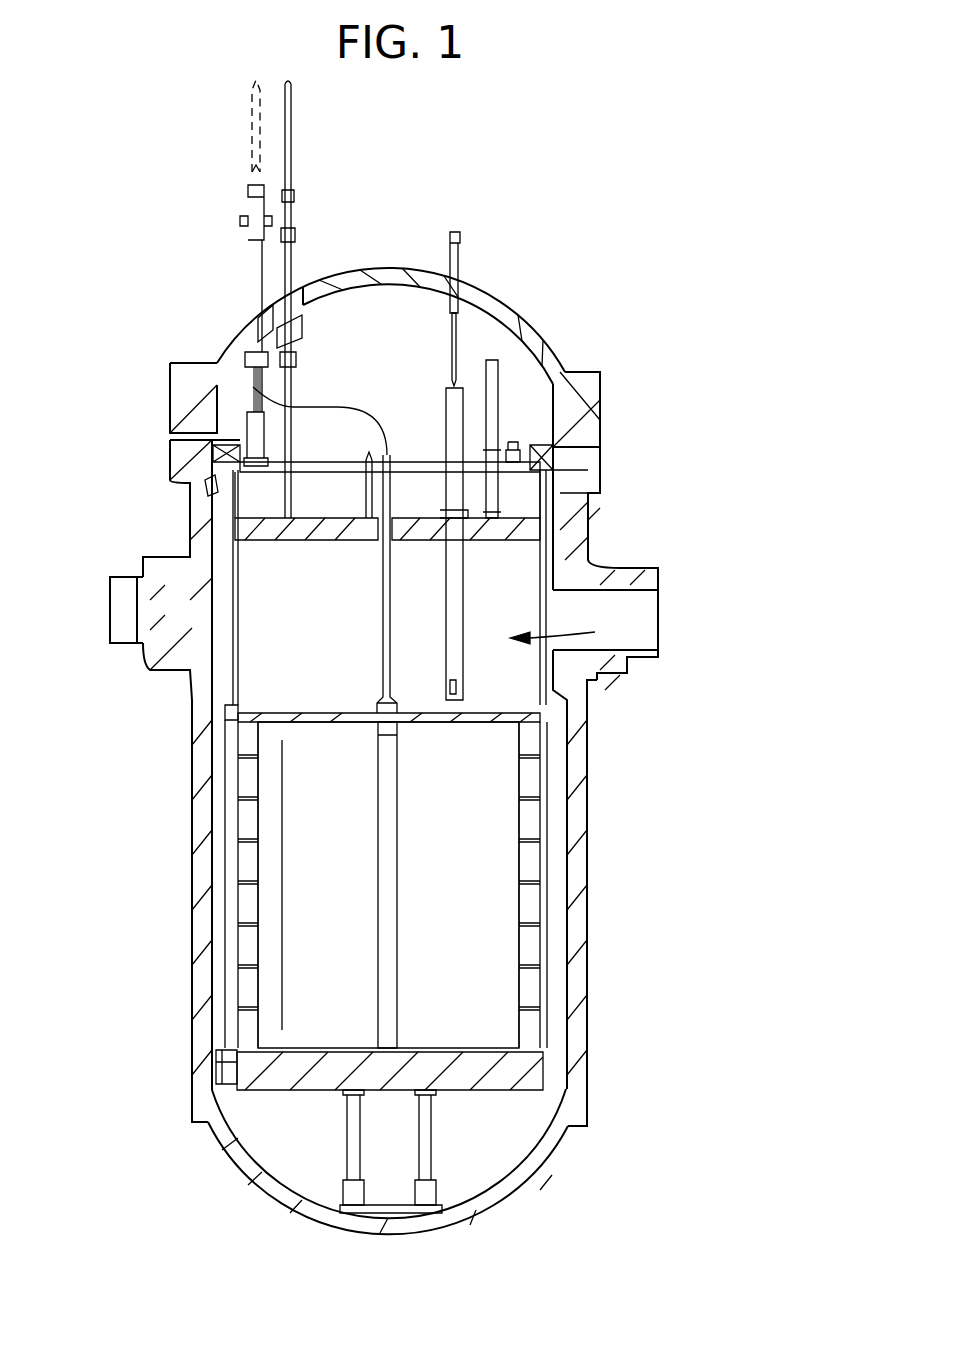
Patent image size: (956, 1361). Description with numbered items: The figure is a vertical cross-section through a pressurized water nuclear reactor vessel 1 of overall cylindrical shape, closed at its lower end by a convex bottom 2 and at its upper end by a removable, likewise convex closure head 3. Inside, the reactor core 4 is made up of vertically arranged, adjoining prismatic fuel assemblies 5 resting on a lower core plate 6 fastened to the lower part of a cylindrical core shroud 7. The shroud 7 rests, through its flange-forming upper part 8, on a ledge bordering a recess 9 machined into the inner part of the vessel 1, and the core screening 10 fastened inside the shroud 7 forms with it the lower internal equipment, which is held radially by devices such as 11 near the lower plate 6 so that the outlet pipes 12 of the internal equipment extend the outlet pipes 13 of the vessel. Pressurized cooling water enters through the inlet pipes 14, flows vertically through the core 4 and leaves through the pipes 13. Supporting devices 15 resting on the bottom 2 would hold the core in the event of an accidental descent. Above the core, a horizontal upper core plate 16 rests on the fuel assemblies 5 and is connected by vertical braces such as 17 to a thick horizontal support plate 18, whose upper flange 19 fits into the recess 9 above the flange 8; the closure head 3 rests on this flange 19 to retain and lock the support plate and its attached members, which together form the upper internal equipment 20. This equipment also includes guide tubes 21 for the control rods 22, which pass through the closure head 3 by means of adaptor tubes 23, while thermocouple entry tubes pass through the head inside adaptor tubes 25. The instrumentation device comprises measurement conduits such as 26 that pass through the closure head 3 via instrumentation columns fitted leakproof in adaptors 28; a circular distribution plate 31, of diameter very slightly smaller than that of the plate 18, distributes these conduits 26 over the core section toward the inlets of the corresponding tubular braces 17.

The vessel 1 is at (585, 812).
The convex bottom 2 is at (312, 1212).
The closure head 3 is at (500, 313).
The reactor core 4 is at (444, 910).
The fuel assemblies 5 is at (397, 968).
The lower core plate 6 is at (503, 1075).
The core shroud 7 is at (222, 805).
The upper part forming a flange 8 is at (210, 488).
The recess 9 is at (215, 452).
The core screening 10 is at (240, 945).
The radial holding devices 11 is at (222, 1062).
The outlet pipes of the internal equipment 12 is at (618, 582).
The outlet pipes of the vessel 13 is at (620, 660).
The inlet pipes 14 is at (157, 655).
The supporting devices 15 is at (432, 1155).
The upper core plate 16 is at (500, 697).
The vertical braces 17 is at (383, 645).
The support plate 18 is at (575, 532).
The upper flange 19 is at (540, 455).
The upper internal equipment 20 is at (575, 635).
The guide tubes 21 is at (463, 600).
The control rods 22 is at (452, 372).
The adaptor tubes 23 is at (462, 252).
The adaptor tubes for thermocouple entry tubes 25 is at (292, 255).
The measurement conduits 26 is at (332, 405).
The adaptors 28 is at (250, 264).
The distribution plate 31 is at (318, 468).